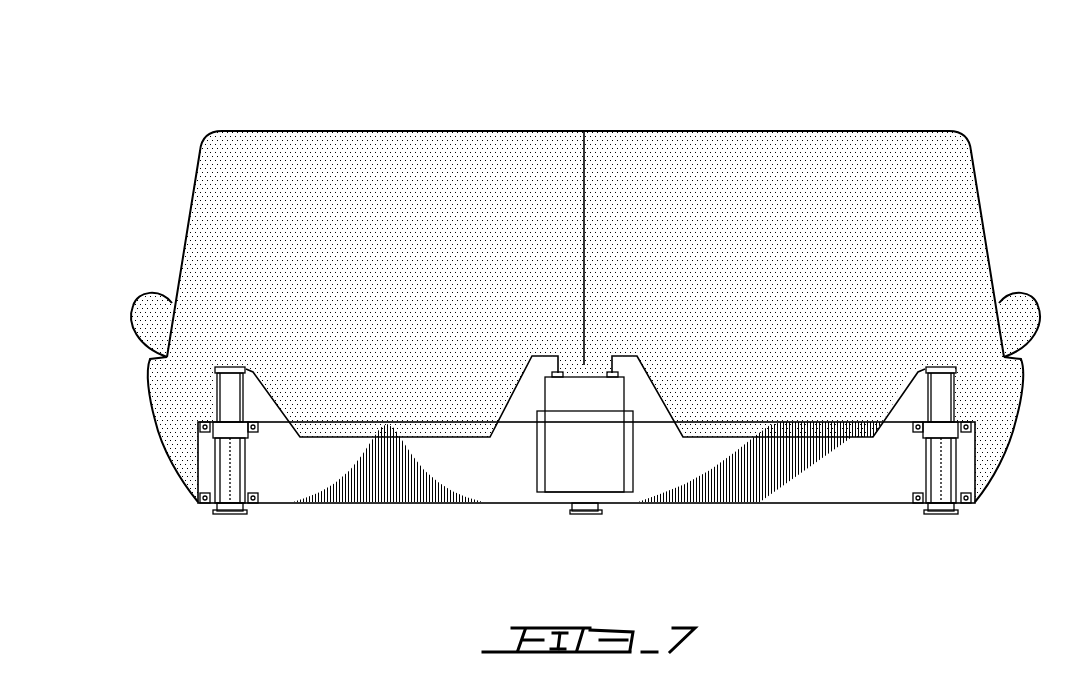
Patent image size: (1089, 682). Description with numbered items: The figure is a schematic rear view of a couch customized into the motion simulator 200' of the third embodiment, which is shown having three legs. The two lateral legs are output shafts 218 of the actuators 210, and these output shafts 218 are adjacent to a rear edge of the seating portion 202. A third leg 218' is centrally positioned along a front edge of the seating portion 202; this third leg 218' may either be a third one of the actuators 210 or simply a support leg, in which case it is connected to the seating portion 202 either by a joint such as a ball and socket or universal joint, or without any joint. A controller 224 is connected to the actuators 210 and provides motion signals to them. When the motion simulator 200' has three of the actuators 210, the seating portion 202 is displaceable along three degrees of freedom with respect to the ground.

The motion simulator 200' is at (586, 256).
The seating portion 202 is at (777, 130).
The actuators 210 is at (214, 467).
The output shafts 218 is at (586, 551).
The third leg 218' is at (625, 539).
The controller 224 is at (568, 463).